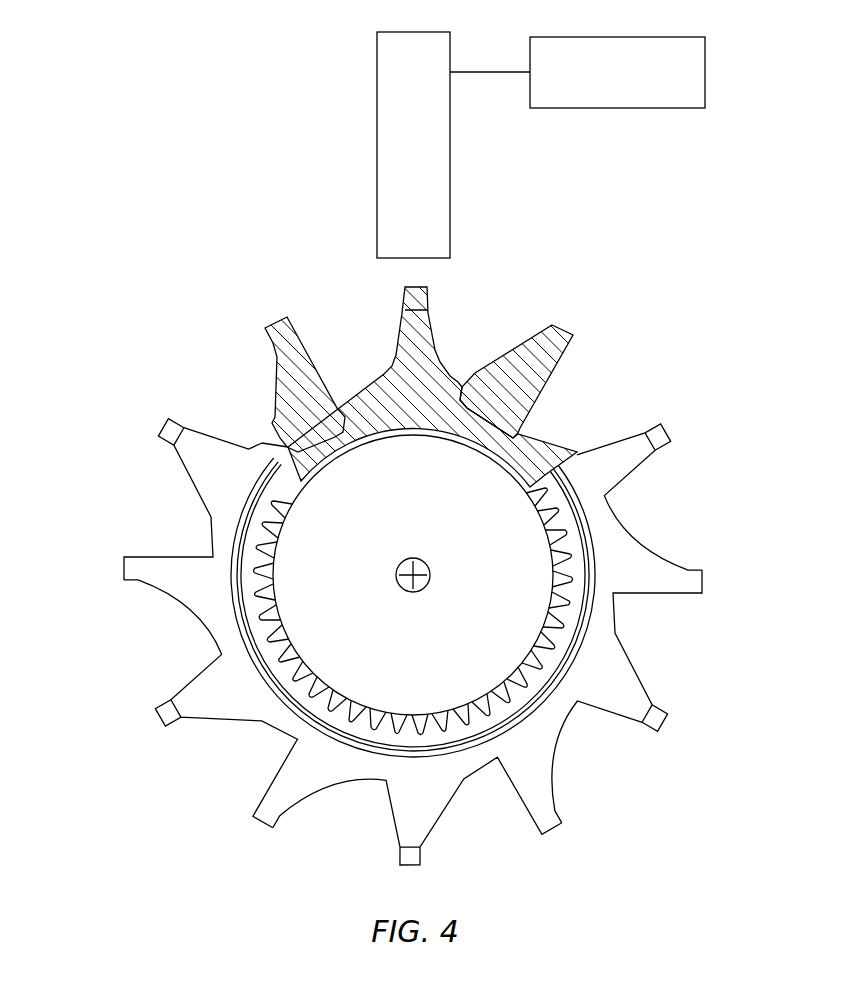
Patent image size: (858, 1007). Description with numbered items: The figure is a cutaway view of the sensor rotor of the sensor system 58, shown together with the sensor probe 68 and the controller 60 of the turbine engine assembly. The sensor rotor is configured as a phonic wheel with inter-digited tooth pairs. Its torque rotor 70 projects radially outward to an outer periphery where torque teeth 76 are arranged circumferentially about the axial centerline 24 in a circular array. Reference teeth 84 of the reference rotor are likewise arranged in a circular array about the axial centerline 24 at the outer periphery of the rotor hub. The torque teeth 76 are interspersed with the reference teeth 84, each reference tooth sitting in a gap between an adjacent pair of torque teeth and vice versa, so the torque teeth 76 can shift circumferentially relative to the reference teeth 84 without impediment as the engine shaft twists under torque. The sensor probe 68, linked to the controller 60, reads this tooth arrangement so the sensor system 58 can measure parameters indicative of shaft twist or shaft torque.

The sensor system 58 is at (700, 245).
The controller 60 is at (716, 71).
The sensor probe 68 is at (377, 155).
The torque rotor 70 is at (683, 426).
The torque teeth 76 is at (433, 323).
The reference teeth 84 is at (273, 378).
The axial centerline 24 is at (418, 582).